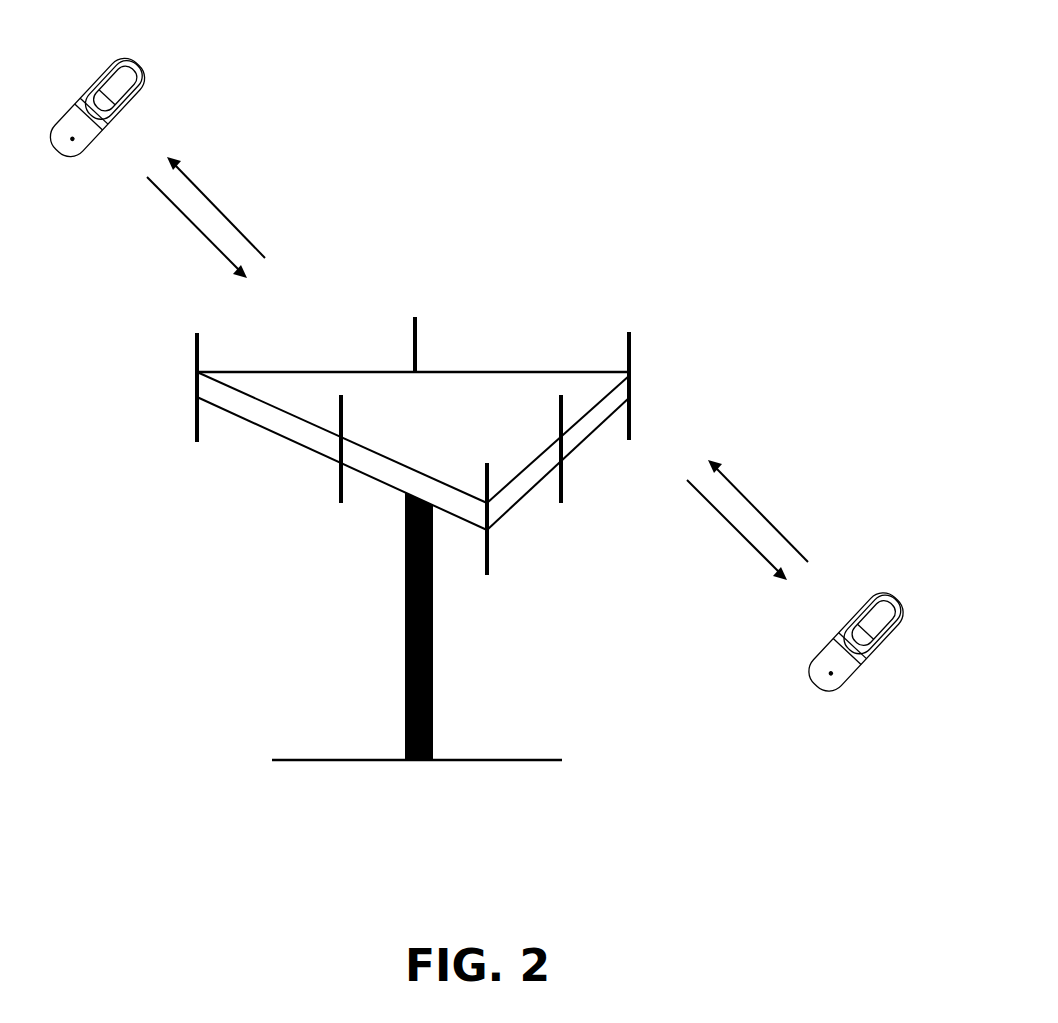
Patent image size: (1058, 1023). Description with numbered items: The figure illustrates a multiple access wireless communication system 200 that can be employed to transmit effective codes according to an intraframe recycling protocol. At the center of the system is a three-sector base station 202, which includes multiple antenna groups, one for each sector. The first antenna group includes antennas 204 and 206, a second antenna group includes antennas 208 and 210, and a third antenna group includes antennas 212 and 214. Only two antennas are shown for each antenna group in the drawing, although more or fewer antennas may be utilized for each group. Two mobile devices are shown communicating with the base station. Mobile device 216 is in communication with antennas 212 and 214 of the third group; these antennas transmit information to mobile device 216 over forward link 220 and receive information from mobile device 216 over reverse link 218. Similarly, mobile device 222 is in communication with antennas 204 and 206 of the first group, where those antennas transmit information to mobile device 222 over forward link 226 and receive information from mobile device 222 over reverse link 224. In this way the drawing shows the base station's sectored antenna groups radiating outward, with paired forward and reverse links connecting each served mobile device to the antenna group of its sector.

The multiple access wireless communication system 200 is at (594, 108).
The 3-sector base station 202 is at (433, 760).
The antenna 204 is at (629, 340).
The antenna 206 is at (561, 480).
The antenna 208 is at (487, 548).
The antenna 210 is at (341, 498).
The antenna 212 is at (197, 340).
The antenna 214 is at (415, 328).
The mobile device 216 is at (108, 55).
The reverse link 218 is at (207, 242).
The forward link 220 is at (218, 208).
The mobile device 222 is at (862, 593).
The reverse link 224 is at (755, 503).
The forward link 226 is at (743, 540).